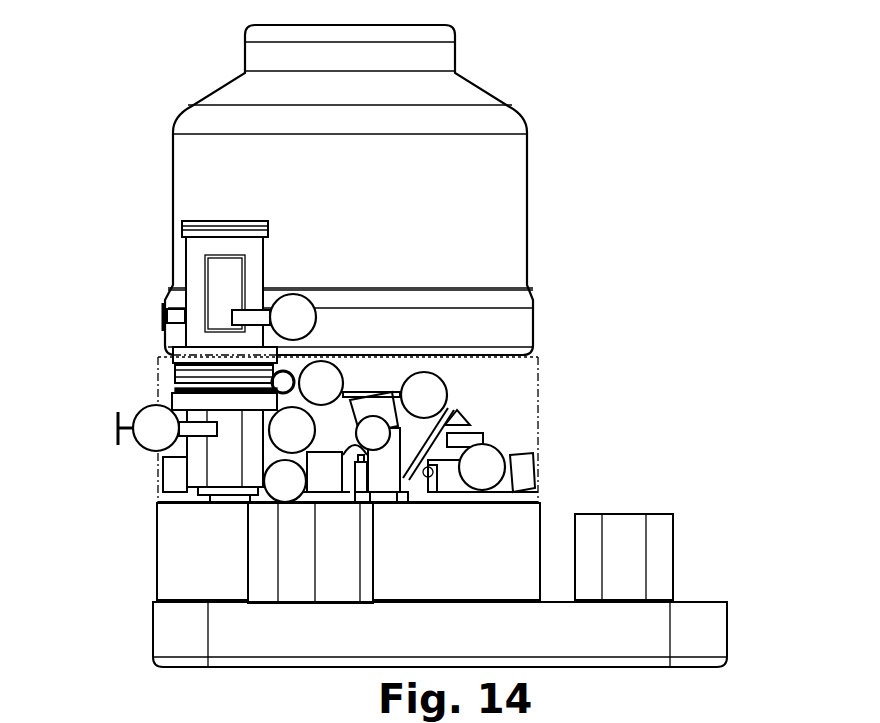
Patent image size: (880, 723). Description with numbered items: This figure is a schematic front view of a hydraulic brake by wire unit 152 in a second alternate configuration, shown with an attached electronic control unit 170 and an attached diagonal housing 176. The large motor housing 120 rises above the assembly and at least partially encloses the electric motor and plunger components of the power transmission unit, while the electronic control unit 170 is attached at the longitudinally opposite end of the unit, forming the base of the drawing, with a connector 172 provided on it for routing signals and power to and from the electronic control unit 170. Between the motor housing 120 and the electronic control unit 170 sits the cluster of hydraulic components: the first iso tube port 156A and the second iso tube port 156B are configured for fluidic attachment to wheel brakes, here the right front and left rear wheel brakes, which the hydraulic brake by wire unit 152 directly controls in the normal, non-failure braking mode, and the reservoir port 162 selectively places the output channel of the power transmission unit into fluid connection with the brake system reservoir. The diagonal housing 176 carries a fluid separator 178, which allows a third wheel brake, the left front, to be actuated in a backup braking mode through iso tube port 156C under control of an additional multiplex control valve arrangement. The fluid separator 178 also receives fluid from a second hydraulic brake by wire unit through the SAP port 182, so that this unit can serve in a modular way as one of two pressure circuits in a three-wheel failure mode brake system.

The motor housing 120 is at (527, 218).
The hydraulic brake by wire unit 152 is at (697, 290).
The SAP port 182 is at (290, 316).
The fluid separator 178 is at (210, 341).
The diagonal housing 176 is at (138, 475).
The first iso tube port 156A is at (152, 432).
The second iso tube port 156B is at (488, 458).
The iso tube port 156C is at (287, 430).
The reservoir port 162 is at (432, 390).
The connector 172 is at (682, 542).
The electronic control unit 170 is at (714, 668).